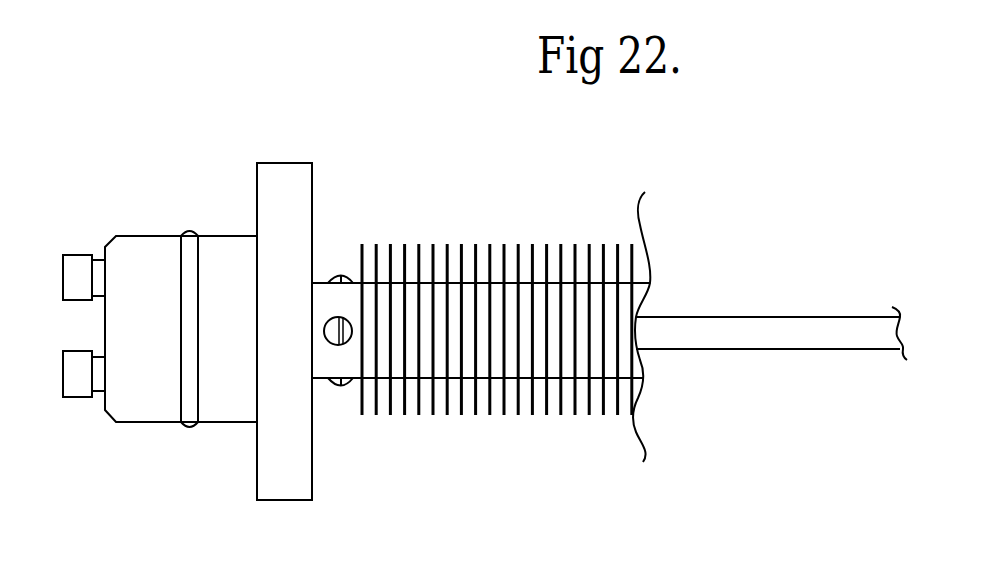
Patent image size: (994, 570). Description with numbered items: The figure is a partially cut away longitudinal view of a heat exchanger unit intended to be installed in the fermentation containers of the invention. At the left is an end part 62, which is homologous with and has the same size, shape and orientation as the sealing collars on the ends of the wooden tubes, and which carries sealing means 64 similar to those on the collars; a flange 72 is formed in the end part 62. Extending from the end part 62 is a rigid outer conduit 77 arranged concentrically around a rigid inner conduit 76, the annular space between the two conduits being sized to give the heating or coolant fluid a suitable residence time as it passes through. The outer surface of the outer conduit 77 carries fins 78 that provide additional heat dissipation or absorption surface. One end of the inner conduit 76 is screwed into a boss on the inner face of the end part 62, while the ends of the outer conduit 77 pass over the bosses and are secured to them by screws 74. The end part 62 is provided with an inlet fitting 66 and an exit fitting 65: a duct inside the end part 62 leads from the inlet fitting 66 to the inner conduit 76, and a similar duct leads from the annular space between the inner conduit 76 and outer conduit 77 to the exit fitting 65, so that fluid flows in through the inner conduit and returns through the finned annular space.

The end part 62 is at (148, 250).
The sealing means 64 is at (193, 378).
The exit fitting 65 is at (78, 380).
The inlet fitting 66 is at (77, 267).
The flange 72 is at (283, 487).
The screws 74 is at (341, 280).
The inner conduit 76 is at (780, 335).
The outer conduit 77 is at (495, 302).
The fins 78 is at (448, 405).